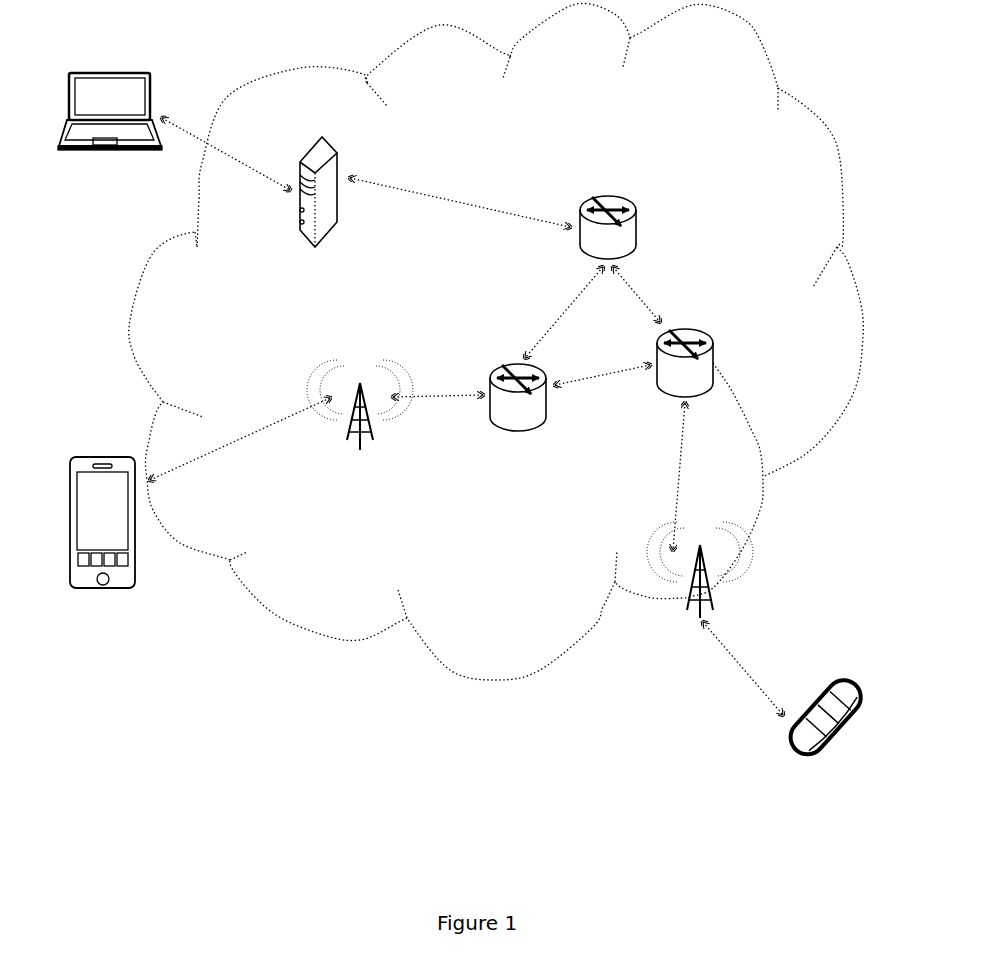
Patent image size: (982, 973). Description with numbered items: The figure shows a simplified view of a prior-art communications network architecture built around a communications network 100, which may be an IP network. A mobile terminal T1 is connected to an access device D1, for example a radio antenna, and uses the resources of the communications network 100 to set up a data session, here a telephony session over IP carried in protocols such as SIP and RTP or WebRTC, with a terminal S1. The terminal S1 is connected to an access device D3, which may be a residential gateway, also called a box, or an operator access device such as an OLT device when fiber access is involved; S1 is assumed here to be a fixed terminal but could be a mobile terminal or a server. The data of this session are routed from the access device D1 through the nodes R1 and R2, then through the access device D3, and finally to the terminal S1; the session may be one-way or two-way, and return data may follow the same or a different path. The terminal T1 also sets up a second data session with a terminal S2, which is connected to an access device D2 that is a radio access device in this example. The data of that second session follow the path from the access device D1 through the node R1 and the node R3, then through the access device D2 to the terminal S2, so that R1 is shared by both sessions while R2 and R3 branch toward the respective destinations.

The communications network 100 is at (496, 341).
The terminal S1 is at (110, 95).
The terminal S2 is at (102, 500).
The access device D3 is at (315, 173).
The access device D2 is at (360, 421).
The access device D1 is at (714, 570).
The node R1 is at (704, 363).
The node R2 is at (606, 206).
The node R3 is at (511, 423).
The terminal T1 is at (813, 739).